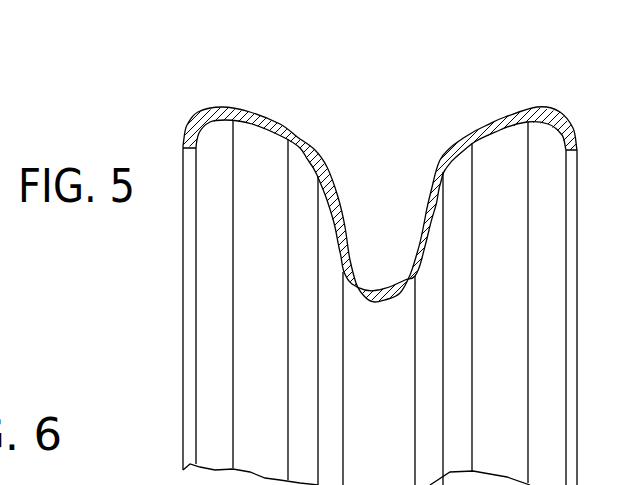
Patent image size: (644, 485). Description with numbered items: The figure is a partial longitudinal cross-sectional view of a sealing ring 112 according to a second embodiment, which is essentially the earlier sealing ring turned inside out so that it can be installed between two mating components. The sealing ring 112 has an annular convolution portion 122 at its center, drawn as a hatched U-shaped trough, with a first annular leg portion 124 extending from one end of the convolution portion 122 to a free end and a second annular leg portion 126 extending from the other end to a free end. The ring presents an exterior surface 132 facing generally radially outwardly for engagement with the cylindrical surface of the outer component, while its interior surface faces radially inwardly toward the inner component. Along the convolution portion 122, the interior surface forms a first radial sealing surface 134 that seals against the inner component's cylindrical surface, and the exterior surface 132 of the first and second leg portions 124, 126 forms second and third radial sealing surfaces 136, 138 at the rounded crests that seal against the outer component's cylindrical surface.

The sealing ring 112 is at (400, 242).
The annular convolution portion 122 is at (381, 285).
The first annular leg portion 124 is at (270, 121).
The second annular leg portion 126 is at (469, 129).
The exterior surface 132 is at (329, 161).
The first radial sealing surface 134 is at (379, 303).
The second radial sealing surface 136 is at (215, 107).
The third radial sealing surface 138 is at (545, 107).